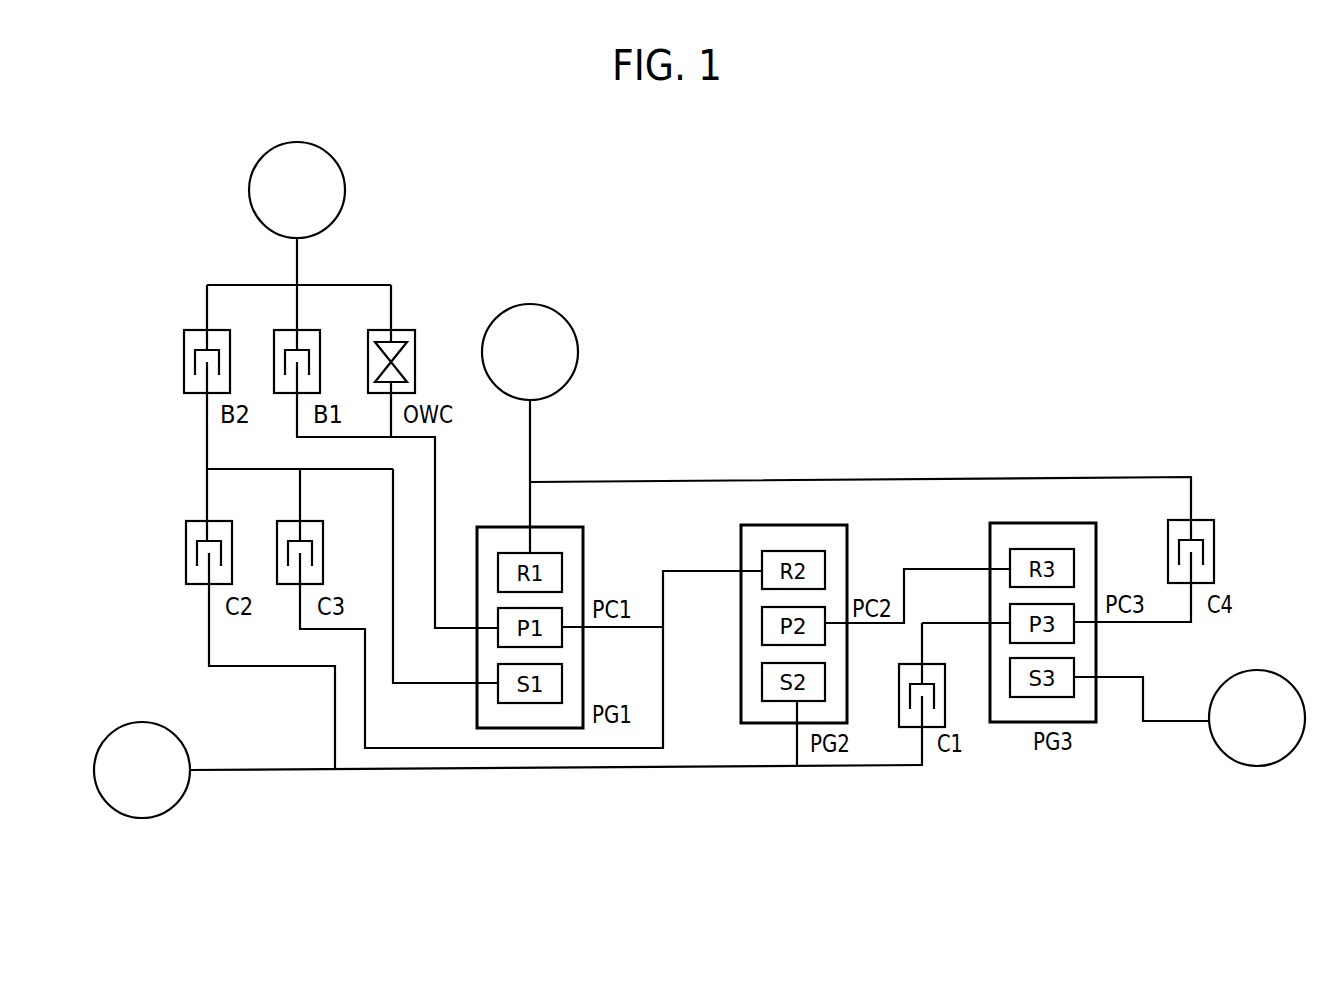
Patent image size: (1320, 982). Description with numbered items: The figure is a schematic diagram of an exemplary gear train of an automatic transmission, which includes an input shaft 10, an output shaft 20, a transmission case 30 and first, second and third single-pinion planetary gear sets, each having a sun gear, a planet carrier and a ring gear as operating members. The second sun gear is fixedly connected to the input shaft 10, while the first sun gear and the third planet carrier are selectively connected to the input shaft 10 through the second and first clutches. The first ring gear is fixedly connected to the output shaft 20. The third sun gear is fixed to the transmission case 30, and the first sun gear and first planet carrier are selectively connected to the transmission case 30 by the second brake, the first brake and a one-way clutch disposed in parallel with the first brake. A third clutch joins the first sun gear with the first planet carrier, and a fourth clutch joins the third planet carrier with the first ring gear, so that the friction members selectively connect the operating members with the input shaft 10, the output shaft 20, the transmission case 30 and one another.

The input shaft 10 is at (260, 770).
The output shaft 20 is at (530, 437).
The transmission case 30 is at (345, 190).